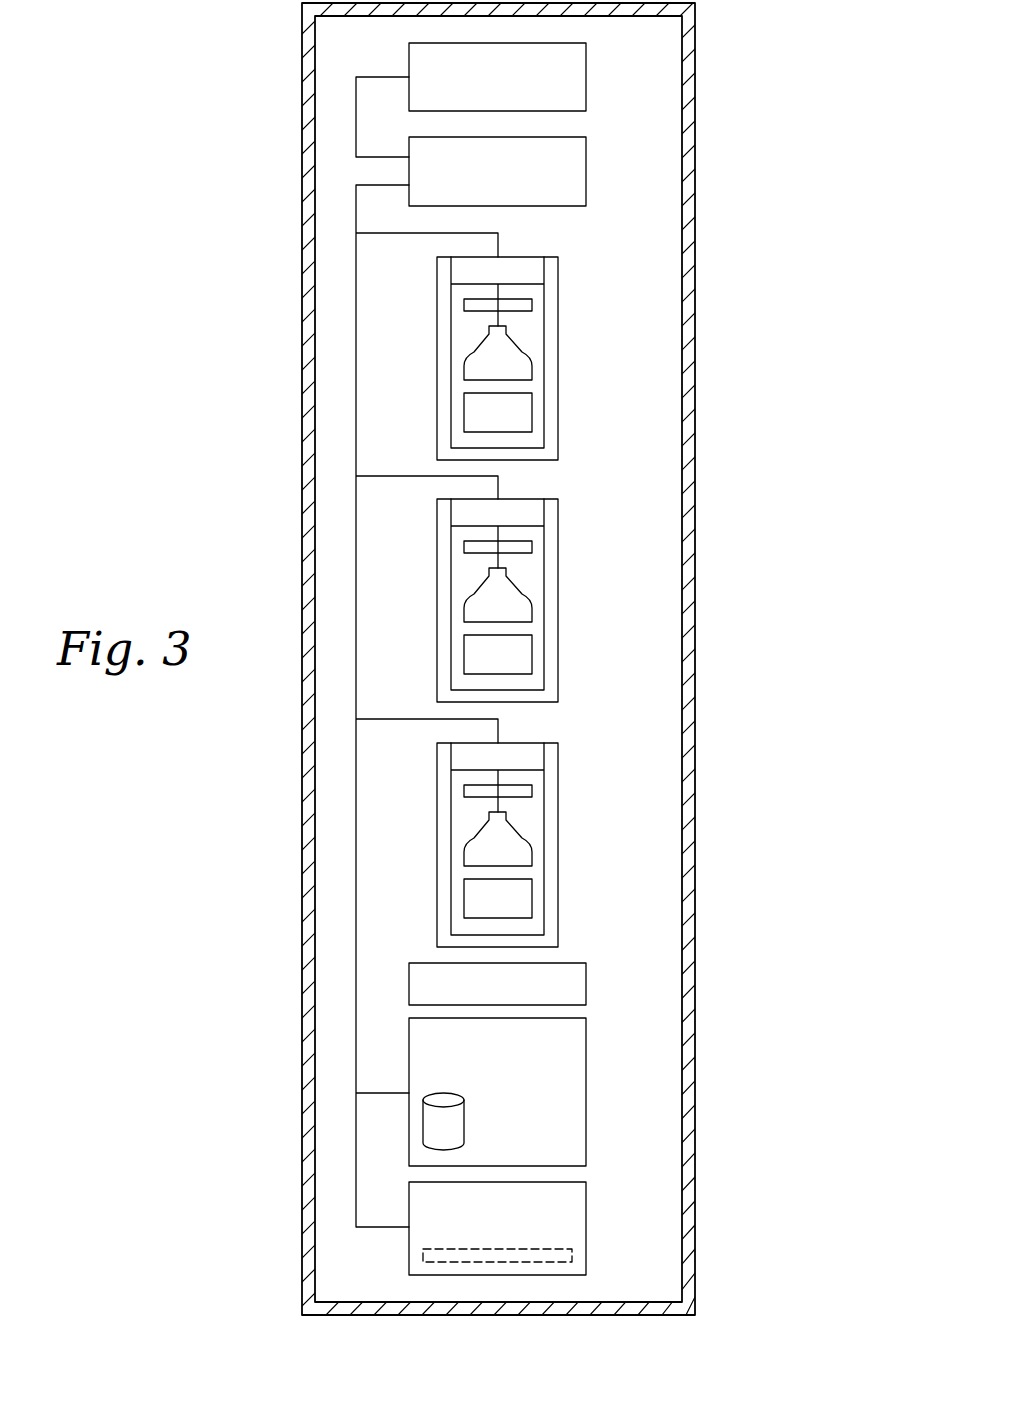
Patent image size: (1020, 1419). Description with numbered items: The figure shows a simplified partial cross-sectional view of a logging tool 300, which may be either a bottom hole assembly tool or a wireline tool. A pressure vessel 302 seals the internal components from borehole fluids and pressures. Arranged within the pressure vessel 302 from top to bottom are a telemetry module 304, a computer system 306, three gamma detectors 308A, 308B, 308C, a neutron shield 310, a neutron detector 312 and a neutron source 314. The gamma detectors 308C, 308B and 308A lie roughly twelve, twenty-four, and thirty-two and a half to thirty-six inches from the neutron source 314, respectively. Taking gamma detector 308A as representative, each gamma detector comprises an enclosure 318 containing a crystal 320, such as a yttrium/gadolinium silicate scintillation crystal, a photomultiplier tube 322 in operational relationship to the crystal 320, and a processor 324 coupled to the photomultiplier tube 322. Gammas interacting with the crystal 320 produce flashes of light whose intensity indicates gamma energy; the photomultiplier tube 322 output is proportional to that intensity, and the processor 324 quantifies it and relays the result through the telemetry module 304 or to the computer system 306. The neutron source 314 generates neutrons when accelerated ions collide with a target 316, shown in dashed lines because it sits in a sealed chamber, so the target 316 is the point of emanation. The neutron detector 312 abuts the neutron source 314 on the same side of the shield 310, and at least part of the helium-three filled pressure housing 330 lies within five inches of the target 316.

The logging tool 300 is at (147, 311).
The pressure vessel 302 is at (695, 218).
The telemetry module 304 is at (587, 69).
The computer system 306 is at (587, 164).
The gamma detector 308A is at (541, 358).
The gamma detector 308B is at (558, 516).
The gamma detector 308C is at (558, 760).
The neutron shield 310 is at (587, 977).
The neutron detector 312 is at (533, 1092).
The neutron source 314 is at (533, 1228).
The target 316 is at (572, 1255).
The enclosure 318 is at (551, 439).
The crystal 320 is at (522, 411).
The photomultiplier tube 322 is at (522, 368).
The processor 324 is at (527, 306).
The pressure housing 330 is at (464, 1118).